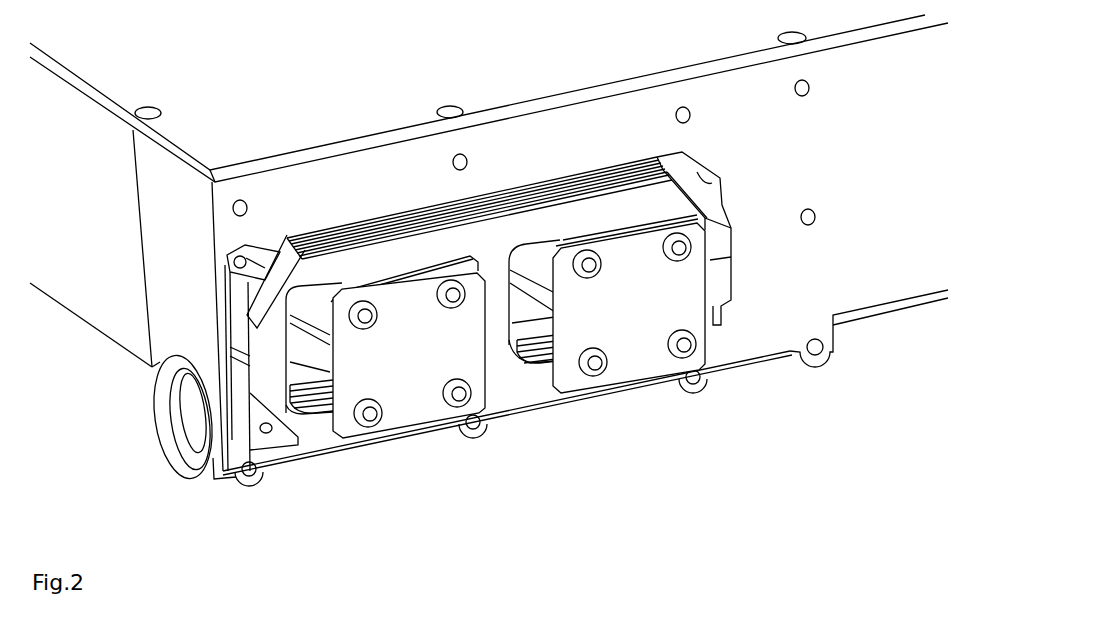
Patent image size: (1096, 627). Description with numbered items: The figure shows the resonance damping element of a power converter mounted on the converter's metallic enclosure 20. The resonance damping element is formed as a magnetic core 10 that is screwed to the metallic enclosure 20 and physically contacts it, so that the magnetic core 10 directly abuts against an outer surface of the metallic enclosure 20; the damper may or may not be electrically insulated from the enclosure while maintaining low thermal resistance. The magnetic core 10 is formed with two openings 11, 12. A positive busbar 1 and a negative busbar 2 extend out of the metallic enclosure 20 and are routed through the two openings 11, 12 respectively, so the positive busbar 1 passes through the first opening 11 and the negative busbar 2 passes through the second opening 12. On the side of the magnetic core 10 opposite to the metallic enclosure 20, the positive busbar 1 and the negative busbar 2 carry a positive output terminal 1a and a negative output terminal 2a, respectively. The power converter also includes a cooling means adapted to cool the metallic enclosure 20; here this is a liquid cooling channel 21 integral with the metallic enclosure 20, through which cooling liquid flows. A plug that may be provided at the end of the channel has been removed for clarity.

The positive busbar 1 is at (313, 310).
The positive output terminal 1a is at (410, 397).
The negative busbar 2 is at (531, 262).
The negative output terminal 2a is at (630, 340).
The magnetic core 10 is at (473, 243).
The opening 11 is at (322, 412).
The opening 12 is at (537, 333).
The metallic enclosure 20 is at (175, 265).
The liquid cooling channel 21 is at (193, 412).